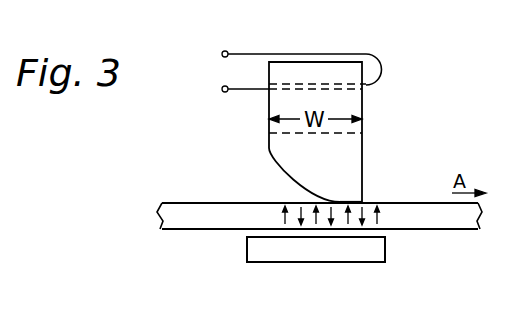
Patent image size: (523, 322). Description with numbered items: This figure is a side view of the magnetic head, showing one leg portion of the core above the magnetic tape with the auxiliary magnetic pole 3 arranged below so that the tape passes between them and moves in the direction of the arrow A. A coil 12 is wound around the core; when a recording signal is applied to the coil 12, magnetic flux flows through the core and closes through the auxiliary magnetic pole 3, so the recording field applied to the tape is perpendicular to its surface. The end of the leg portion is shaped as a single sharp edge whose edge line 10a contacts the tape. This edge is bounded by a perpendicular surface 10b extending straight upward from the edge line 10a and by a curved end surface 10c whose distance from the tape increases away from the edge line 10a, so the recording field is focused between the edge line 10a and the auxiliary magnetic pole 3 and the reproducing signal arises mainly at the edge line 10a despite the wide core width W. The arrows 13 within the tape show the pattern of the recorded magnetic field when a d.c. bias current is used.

The coil 12 is at (262, 54).
The edge line 10a is at (363, 201).
The perpendicular surface 10b is at (363, 170).
The end surface 10c is at (283, 178).
The arrows indicating recorded magnetic field pattern 13 is at (377, 220).
The auxiliary magnetic pole 3 is at (385, 248).